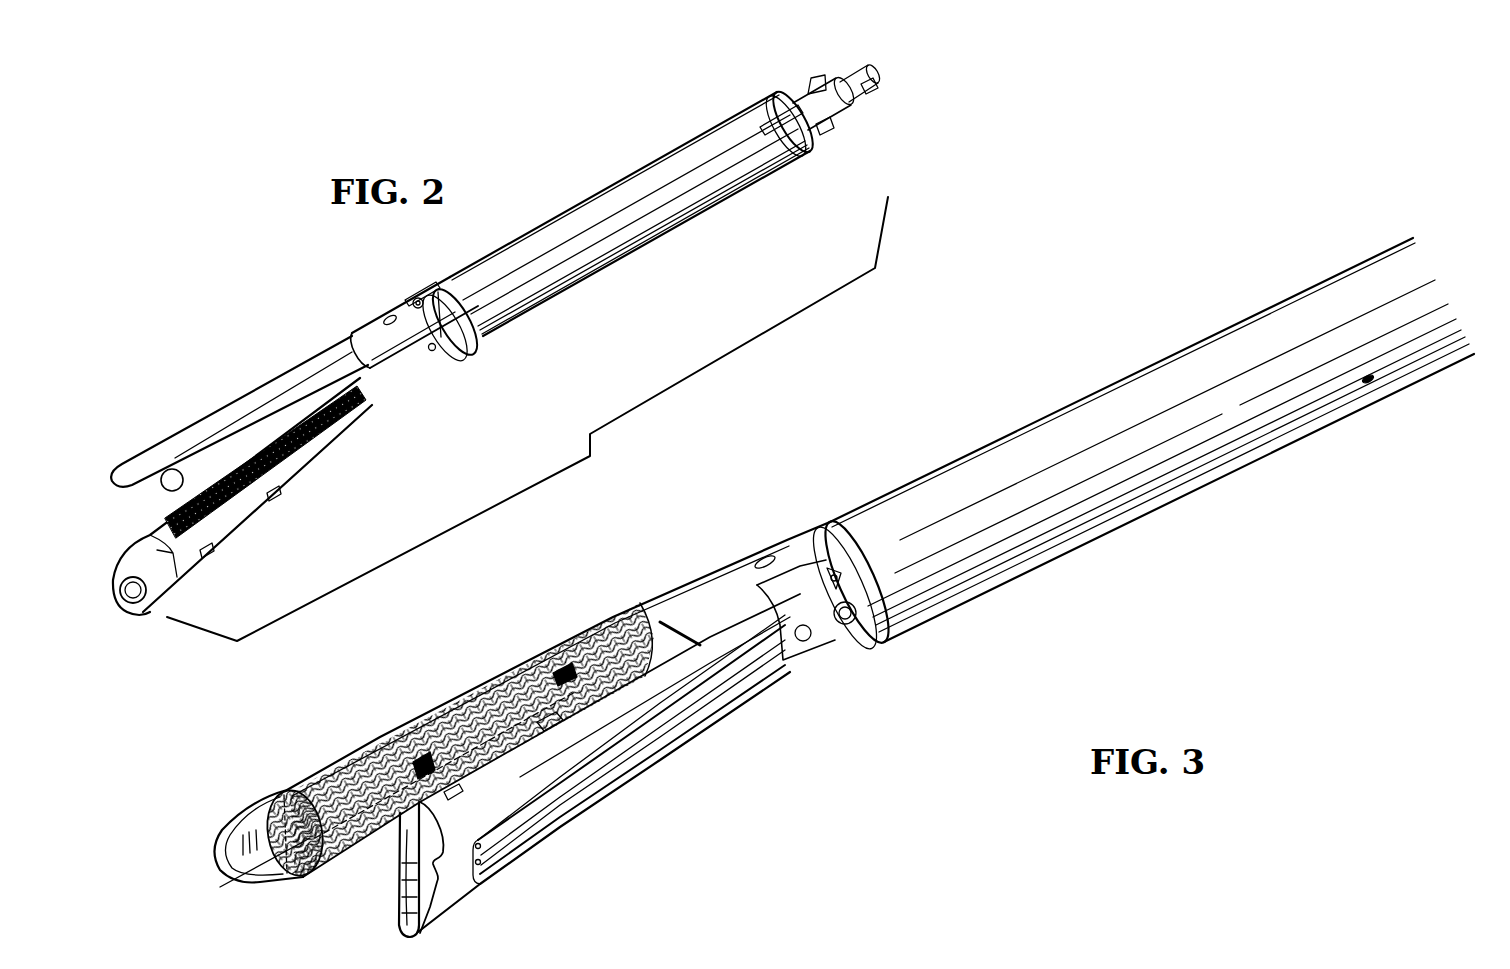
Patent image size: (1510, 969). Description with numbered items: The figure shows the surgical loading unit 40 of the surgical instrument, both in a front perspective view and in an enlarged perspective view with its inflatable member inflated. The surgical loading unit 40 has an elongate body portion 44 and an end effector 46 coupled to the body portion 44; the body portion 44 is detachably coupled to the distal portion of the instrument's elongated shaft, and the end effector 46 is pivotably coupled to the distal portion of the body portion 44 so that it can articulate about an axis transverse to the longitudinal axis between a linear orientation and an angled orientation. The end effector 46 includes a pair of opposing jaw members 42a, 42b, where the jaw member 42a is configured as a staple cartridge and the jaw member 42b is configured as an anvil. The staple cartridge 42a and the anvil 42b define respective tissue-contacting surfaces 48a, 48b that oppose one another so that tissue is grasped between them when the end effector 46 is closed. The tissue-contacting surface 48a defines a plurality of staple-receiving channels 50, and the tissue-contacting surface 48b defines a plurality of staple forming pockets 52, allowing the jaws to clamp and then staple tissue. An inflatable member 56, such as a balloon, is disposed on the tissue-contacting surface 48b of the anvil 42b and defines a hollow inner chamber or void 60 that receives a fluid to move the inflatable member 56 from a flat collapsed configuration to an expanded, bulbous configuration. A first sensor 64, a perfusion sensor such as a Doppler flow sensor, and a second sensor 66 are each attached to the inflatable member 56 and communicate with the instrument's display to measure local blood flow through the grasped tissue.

In FIG. 2, the surgical loading unit 40 is at (527, 419).
In FIG. 3, the surgical loading unit 40 is at (866, 476).
In FIG. 2, the jaw member configured as a staple cartridge 42a is at (320, 450).
In FIG. 3, the jaw member configured as a staple cartridge 42a is at (650, 753).
In FIG. 2, the jaw member configured as an anvil 42b is at (228, 408).
In FIG. 3, the jaw member configured as an anvil 42b is at (245, 803).
In FIG. 2, the elongate body portion 44 is at (697, 200).
In FIG. 3, the elongate body portion 44 is at (1162, 388).
In FIG. 2, the end effector 46 is at (302, 354).
In FIG. 3, the end effector 46 is at (720, 735).
In FIG. 2, the tissue-contacting surface of the staple cartridge 48a is at (152, 528).
In FIG. 3, the tissue-contacting surface of the staple cartridge 48a is at (353, 838).
In FIG. 2, the tissue-contacting surface of the anvil 48b is at (162, 442).
In FIG. 3, the tissue-contacting surface of the anvil 48b is at (553, 660).
In FIG. 2, the staple-receiving channels 50 is at (240, 497).
In FIG. 3, the staple forming pockets 52 is at (358, 763).
In FIG. 3, the inflatable member 56 is at (248, 872).
In FIG. 3, the hollow inner chamber or void 60 is at (318, 840).
In FIG. 3, the first sensor 64 is at (428, 752).
In FIG. 3, the second sensor 66 is at (557, 675).